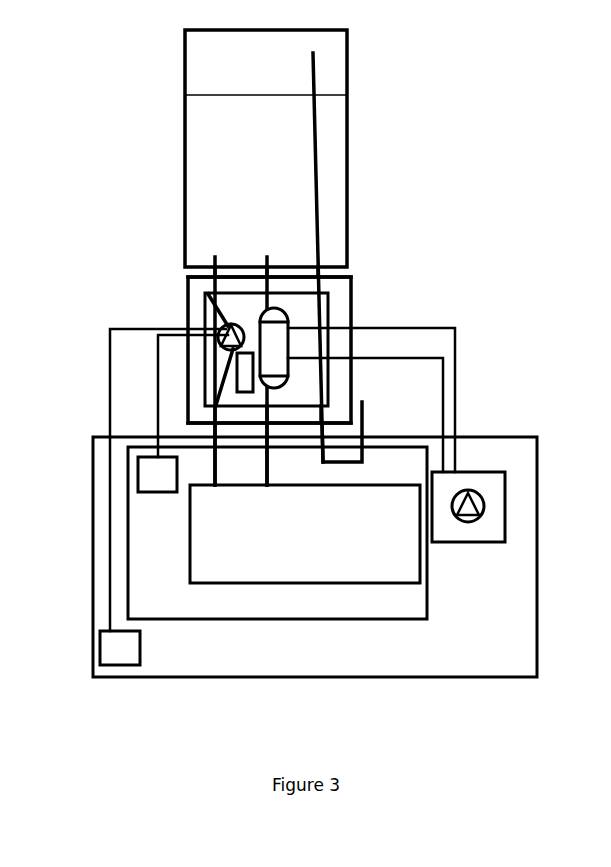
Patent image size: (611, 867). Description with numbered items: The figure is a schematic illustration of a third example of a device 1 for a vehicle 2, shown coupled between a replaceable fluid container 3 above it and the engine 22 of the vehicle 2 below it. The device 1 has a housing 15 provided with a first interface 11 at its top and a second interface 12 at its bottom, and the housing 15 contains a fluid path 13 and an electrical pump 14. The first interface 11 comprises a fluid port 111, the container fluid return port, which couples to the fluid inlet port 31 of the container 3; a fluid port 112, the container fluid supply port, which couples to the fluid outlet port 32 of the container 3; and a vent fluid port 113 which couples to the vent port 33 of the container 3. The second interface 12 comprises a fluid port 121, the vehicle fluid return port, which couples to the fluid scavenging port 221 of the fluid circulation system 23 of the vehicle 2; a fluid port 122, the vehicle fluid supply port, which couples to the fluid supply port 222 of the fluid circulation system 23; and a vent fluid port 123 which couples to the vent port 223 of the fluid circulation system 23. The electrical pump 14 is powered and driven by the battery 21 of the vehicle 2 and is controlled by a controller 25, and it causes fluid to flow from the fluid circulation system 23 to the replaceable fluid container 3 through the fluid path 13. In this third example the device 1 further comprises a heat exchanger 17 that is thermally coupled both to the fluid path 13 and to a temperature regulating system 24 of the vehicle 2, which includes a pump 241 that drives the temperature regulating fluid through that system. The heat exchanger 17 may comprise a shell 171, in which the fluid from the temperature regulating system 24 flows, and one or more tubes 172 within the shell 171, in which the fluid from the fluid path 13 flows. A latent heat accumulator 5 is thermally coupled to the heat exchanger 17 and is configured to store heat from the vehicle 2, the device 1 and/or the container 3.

The device 1 is at (343, 298).
The vehicle 2 is at (523, 467).
The replaceable fluid container 3 is at (216, 67).
The latent heat accumulator 5 is at (243, 372).
The first interface 11 is at (336, 277).
The second interface 12 is at (188, 424).
The fluid path 13 is at (322, 391).
The electrical pump 14 is at (220, 331).
The housing 15 is at (188, 307).
The heat exchanger 17 is at (283, 330).
The battery 21 is at (161, 478).
The engine 22 is at (406, 473).
The fluid circulation system 23 is at (398, 527).
The temperature regulating system 24 is at (455, 400).
The controller 25 is at (118, 650).
The fluid inlet port 31 is at (212, 263).
The fluid outlet port 32 is at (264, 272).
The vent port 33 is at (321, 262).
The fluid port 111 is at (205, 277).
The fluid port 112 is at (263, 273).
The vent fluid port 113 is at (333, 276).
The fluid port 121 is at (214, 403).
The fluid port 122 is at (266, 403).
The vent fluid port 123 is at (322, 403).
The shell 171 is at (280, 312).
The tubes 172 is at (277, 347).
The fluid scavenging port 221 is at (215, 450).
The fluid supply port 222 is at (267, 450).
The vent port 223 is at (322, 448).
The pump 241 is at (487, 505).